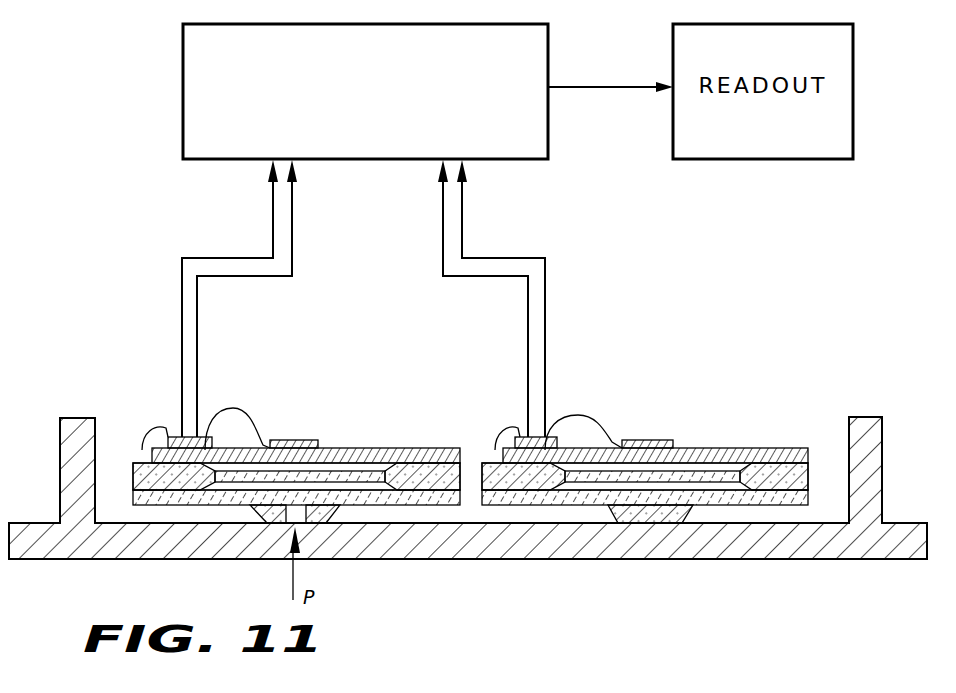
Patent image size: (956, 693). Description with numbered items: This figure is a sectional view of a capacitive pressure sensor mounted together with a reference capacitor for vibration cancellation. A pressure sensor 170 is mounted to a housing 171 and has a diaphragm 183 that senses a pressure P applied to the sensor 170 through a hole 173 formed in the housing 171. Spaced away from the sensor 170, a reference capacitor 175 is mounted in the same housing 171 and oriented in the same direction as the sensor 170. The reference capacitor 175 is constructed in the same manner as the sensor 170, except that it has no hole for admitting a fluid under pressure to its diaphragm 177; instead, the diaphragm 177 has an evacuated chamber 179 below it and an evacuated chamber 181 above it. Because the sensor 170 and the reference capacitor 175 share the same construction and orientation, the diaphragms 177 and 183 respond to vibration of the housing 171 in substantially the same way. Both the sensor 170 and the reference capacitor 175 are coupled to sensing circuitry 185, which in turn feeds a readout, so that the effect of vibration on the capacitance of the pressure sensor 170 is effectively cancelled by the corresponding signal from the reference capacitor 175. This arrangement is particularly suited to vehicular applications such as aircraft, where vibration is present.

The pressure sensor 170 is at (296, 486).
The housing 171 is at (172, 560).
The hole 173 is at (320, 508).
The reference capacitor 175 is at (657, 462).
The diaphragm 177 is at (768, 458).
The evacuated chamber 179 is at (720, 490).
The evacuated chamber 181 is at (692, 458).
The diaphragm 183 is at (375, 472).
The sensing circuitry 185 is at (218, 132).